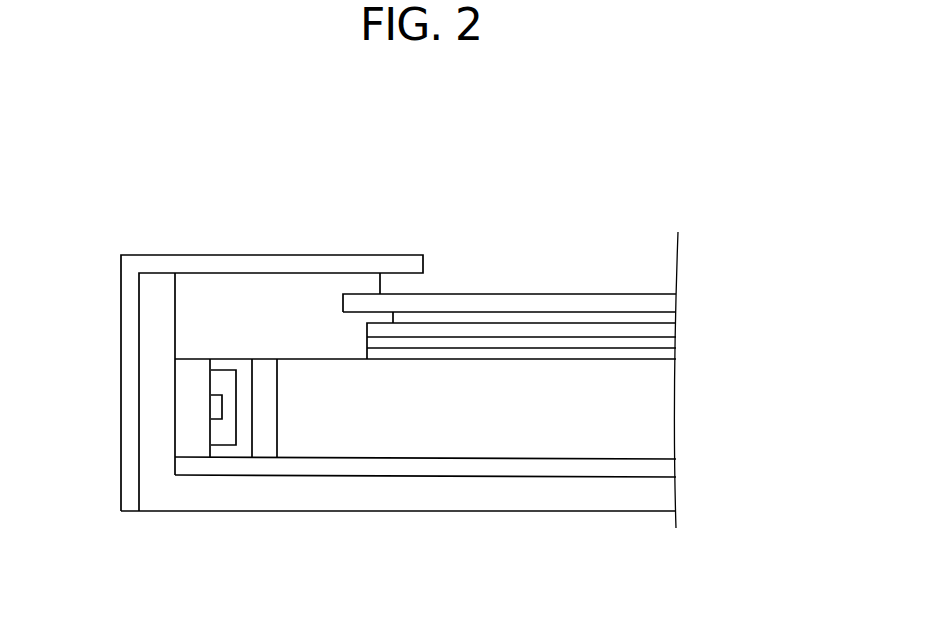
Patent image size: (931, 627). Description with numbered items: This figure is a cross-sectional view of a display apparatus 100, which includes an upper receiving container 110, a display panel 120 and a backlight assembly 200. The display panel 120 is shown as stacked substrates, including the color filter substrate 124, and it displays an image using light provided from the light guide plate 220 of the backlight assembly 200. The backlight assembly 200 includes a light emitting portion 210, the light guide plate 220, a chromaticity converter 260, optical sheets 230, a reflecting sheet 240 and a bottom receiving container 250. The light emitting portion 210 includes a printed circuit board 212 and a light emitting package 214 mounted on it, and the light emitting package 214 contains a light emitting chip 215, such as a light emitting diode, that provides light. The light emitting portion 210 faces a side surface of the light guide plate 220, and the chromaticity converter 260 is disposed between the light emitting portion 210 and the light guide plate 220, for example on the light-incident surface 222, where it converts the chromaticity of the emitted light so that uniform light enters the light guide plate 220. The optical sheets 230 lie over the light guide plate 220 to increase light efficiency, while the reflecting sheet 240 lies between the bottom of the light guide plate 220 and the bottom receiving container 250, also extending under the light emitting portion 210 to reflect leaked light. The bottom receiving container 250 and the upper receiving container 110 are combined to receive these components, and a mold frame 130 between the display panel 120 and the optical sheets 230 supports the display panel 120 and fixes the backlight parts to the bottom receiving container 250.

The display apparatus 100 is at (660, 216).
The receiving container 110 is at (125, 476).
The display panel 120 is at (570, 297).
The color filter substrate 124 is at (679, 282).
The mold frame 130 is at (203, 311).
The backlight assembly 200 is at (487, 446).
The light emitting portion 210 is at (118, 402).
The printed circuit board 212 is at (187, 427).
The light emitting package 214 is at (226, 371).
The light emitting chip 215 is at (221, 393).
The light guide plate 220 is at (672, 406).
The light-incident surface 222 is at (277, 426).
The optical sheets 230 is at (693, 326).
The reflecting sheet 240 is at (672, 468).
The bottom receiving container 250 is at (463, 491).
The chromaticity converter 260 is at (263, 440).